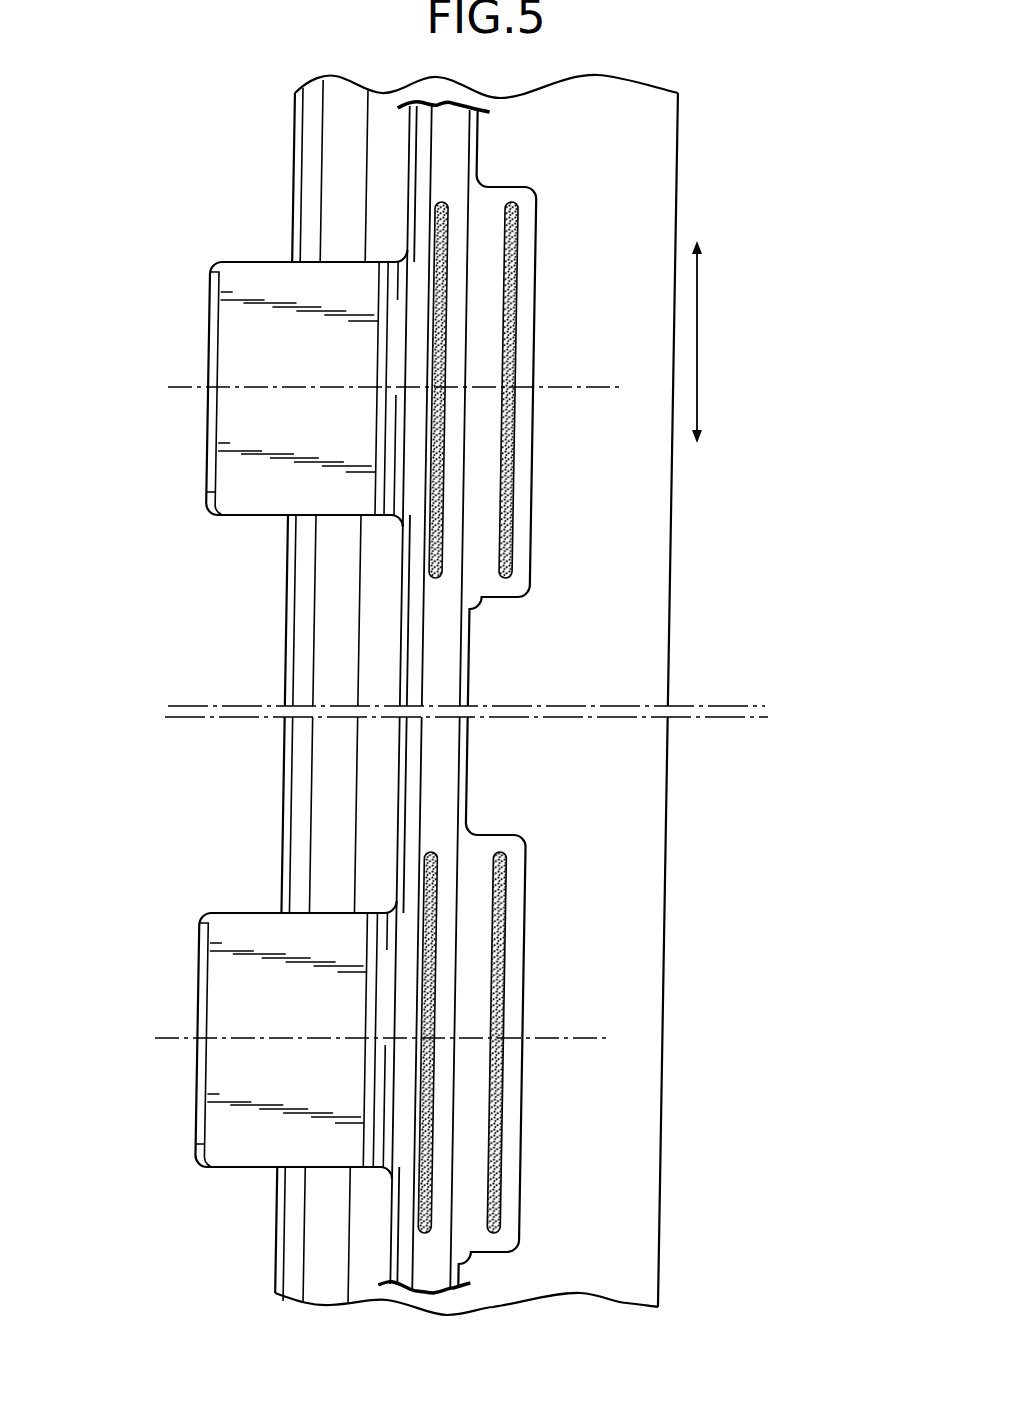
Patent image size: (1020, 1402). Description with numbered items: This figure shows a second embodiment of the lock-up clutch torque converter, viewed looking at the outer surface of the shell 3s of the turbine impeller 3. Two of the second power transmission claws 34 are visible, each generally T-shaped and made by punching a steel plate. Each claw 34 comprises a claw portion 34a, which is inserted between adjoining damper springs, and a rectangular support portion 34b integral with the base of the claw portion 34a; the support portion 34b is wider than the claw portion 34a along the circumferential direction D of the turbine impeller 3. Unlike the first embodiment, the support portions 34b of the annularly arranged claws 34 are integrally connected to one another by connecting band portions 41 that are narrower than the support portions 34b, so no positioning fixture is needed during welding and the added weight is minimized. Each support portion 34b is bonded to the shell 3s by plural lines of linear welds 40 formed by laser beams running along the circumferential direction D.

The turbine impeller 3 is at (686, 182).
The shell 3s is at (648, 603).
The second power transmission claw 34 is at (234, 520).
The claw portion 34a is at (243, 345).
The support portion 34b is at (531, 242).
The welds 40 is at (510, 503).
The connecting band portion 41 is at (432, 137).
The circumferential direction D is at (697, 316).